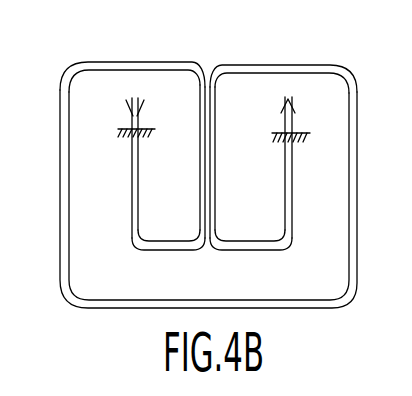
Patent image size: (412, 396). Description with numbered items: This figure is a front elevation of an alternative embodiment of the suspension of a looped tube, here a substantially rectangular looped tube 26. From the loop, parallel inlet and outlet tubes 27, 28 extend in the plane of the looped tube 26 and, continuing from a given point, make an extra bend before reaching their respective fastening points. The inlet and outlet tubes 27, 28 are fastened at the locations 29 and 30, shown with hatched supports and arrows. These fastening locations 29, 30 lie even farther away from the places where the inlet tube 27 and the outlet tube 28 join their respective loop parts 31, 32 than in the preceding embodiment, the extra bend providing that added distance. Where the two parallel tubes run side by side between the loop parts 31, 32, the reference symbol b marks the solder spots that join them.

The looped tube 26 is at (182, 164).
The inlet tube 27 is at (199, 150).
The outlet tube 28 is at (211, 183).
The fastening location 29 is at (118, 129).
The fastening location 30 is at (272, 132).
The loop part 31 is at (147, 61).
The loop part 32 is at (256, 64).
The solder spots b is at (215, 133).